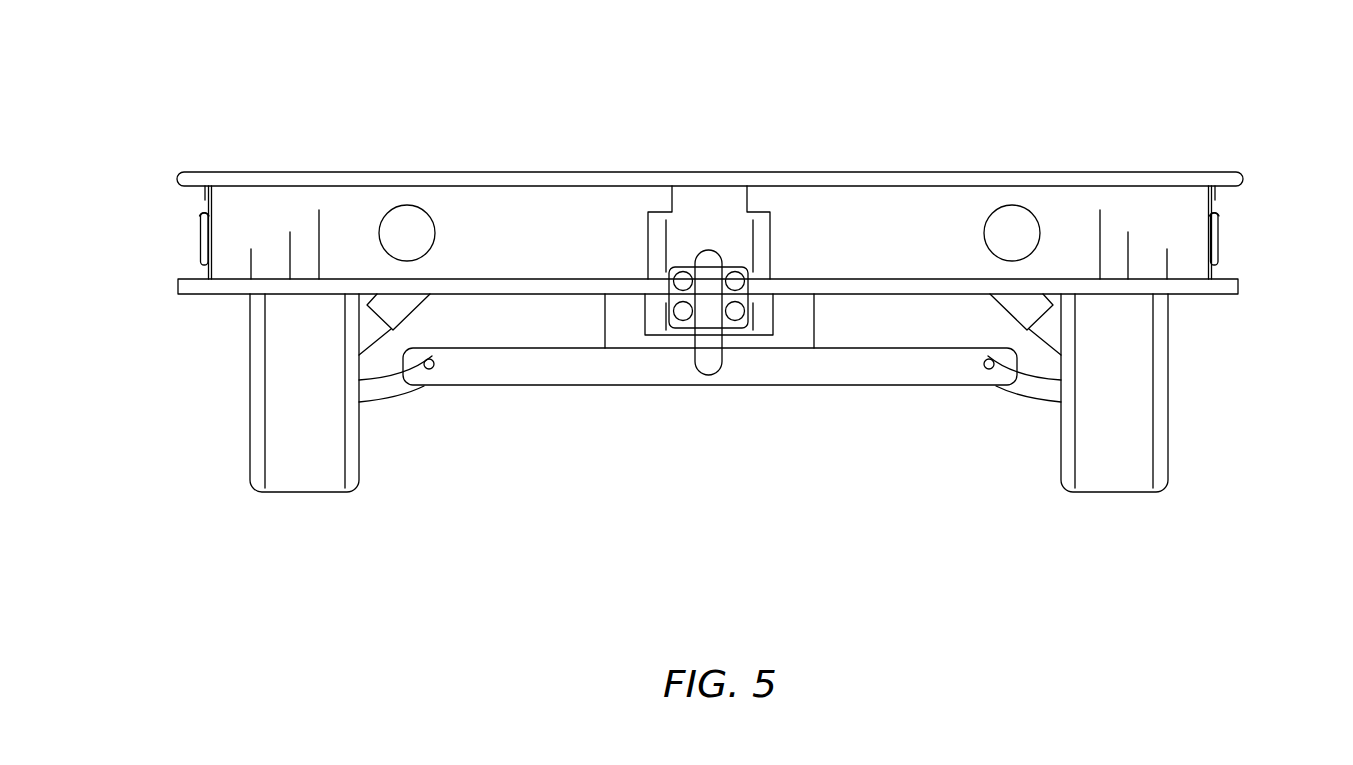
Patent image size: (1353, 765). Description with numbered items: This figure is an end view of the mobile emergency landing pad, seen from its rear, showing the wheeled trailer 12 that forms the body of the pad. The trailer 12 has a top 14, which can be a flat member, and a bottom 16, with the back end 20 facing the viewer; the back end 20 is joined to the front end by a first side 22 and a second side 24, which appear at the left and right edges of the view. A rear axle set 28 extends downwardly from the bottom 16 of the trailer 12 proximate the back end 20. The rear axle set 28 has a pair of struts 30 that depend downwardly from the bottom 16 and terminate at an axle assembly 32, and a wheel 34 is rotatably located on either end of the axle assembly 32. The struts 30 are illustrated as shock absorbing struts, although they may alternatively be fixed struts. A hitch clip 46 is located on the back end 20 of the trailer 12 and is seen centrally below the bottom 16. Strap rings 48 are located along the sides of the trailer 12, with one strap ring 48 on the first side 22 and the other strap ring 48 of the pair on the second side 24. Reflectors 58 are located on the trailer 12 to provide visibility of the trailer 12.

The wheeled trailer 12 is at (1190, 235).
The top 14 is at (525, 172).
The bottom 16 is at (517, 292).
The back end 20 is at (853, 233).
The first side 22 is at (207, 198).
The second side 24 is at (1212, 202).
The rear axle set 28 is at (711, 374).
The struts 30 is at (375, 327).
The axle assembly 32 is at (962, 385).
The wheel 34 is at (303, 480).
The hitch clip 46 is at (708, 358).
The strap rings 48 is at (202, 238).
The reflectors 58 is at (408, 218).